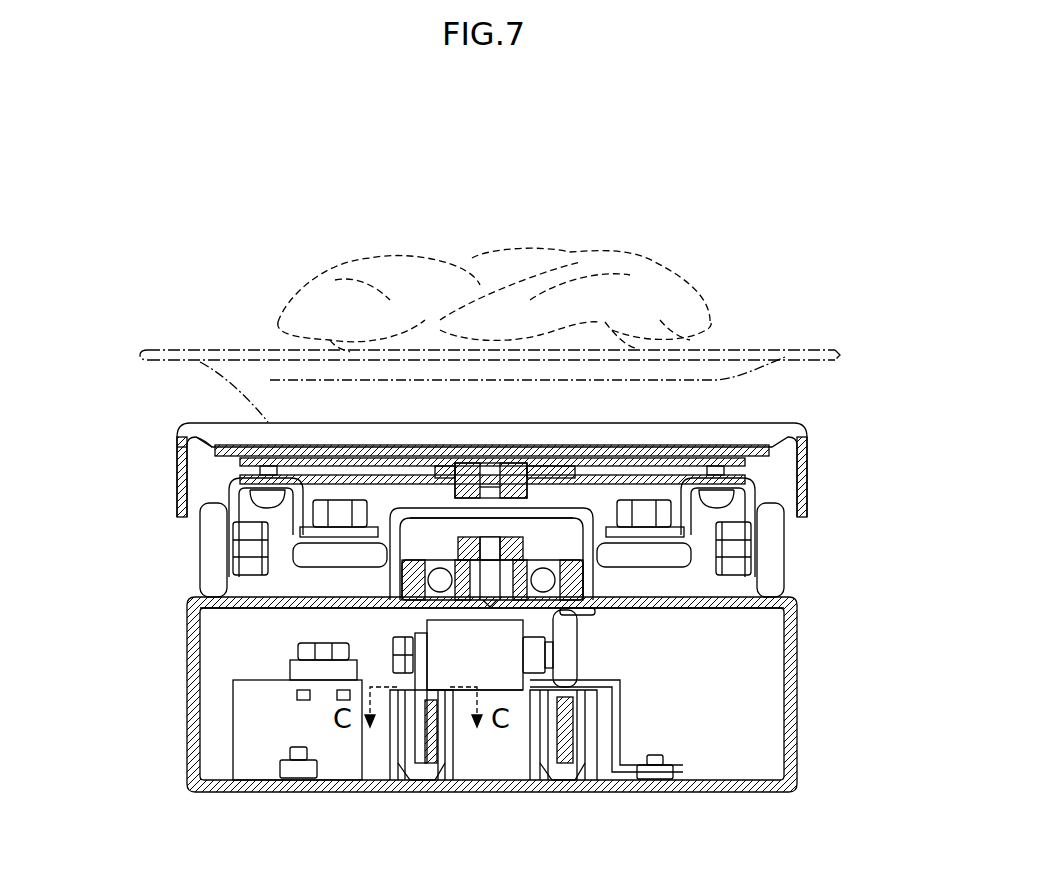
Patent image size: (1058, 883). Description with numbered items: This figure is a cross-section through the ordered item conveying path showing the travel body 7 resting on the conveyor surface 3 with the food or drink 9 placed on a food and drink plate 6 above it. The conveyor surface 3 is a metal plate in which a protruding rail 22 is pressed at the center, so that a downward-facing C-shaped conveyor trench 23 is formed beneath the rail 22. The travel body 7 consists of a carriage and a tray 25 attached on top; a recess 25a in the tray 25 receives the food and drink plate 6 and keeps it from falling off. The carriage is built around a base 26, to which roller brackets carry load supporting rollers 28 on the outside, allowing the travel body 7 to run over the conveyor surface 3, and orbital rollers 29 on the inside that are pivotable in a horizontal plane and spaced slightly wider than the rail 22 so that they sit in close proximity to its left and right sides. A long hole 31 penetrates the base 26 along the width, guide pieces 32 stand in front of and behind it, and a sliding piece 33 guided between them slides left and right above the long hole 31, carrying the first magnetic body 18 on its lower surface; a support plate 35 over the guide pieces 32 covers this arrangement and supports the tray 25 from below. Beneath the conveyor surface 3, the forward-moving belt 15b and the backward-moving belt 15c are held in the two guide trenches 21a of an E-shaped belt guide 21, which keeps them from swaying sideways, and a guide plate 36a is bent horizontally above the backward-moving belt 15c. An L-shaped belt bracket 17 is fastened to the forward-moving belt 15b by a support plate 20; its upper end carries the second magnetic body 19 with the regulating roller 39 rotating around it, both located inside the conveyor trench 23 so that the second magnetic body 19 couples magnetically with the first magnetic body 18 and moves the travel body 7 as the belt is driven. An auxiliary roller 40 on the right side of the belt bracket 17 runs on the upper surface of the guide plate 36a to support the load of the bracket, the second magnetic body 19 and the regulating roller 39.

The conveyor surface 3 is at (793, 597).
The food and drink plate 6 is at (835, 355).
The travel body 7 is at (150, 485).
The food or drink 9 is at (362, 252).
The forward-moving belt 15b is at (433, 780).
The backward-moving belt 15c is at (560, 782).
The belt bracket 17 is at (435, 616).
The first magnetic body 18 is at (450, 463).
The second magnetic body 19 is at (393, 560).
The support plate 20 is at (420, 678).
The belt guide 21 is at (490, 760).
The guide trench 21a is at (562, 722).
The rail 22 is at (430, 508).
The conveyor trench 23 is at (545, 533).
The tray 25 is at (175, 450).
The recess 25a is at (267, 440).
The base 26 is at (752, 493).
The load supporting roller 28 is at (208, 538).
The orbital roller 29 is at (305, 553).
The long hole 31 is at (353, 447).
The guide piece 32 is at (627, 458).
The sliding piece 33 is at (513, 458).
The support plate 35 is at (700, 450).
The guide plate 36a is at (618, 684).
The regulating roller 39 is at (595, 612).
The auxiliary roller 40 is at (572, 645).